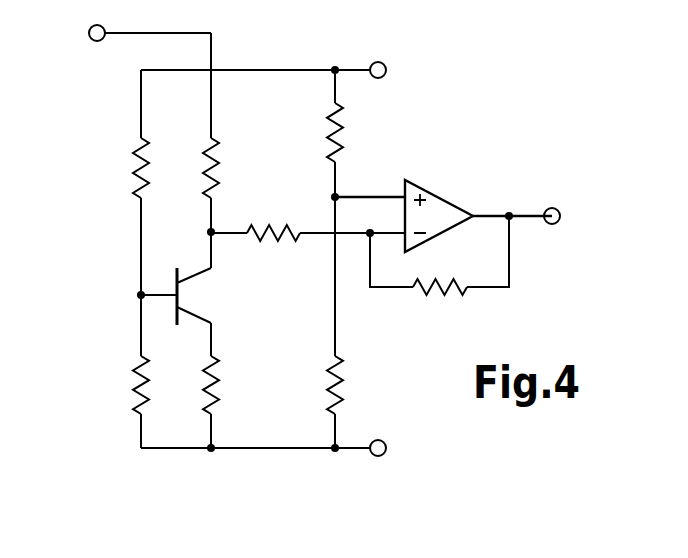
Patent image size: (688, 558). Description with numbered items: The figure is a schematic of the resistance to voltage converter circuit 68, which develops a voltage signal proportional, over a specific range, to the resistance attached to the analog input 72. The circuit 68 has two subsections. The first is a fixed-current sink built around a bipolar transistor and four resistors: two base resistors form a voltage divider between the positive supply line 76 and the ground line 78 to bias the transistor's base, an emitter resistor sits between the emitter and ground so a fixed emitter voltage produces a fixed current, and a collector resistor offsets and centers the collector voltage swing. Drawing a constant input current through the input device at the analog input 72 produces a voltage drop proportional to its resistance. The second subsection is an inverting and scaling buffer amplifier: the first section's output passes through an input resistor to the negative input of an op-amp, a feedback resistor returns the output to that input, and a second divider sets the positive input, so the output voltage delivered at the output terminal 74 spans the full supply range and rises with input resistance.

The circuit 68 is at (518, 150).
The analog input 72 is at (100, 25).
The output terminal 74 is at (555, 224).
The positive supply line 76 is at (281, 69).
The ground line 78 is at (291, 451).